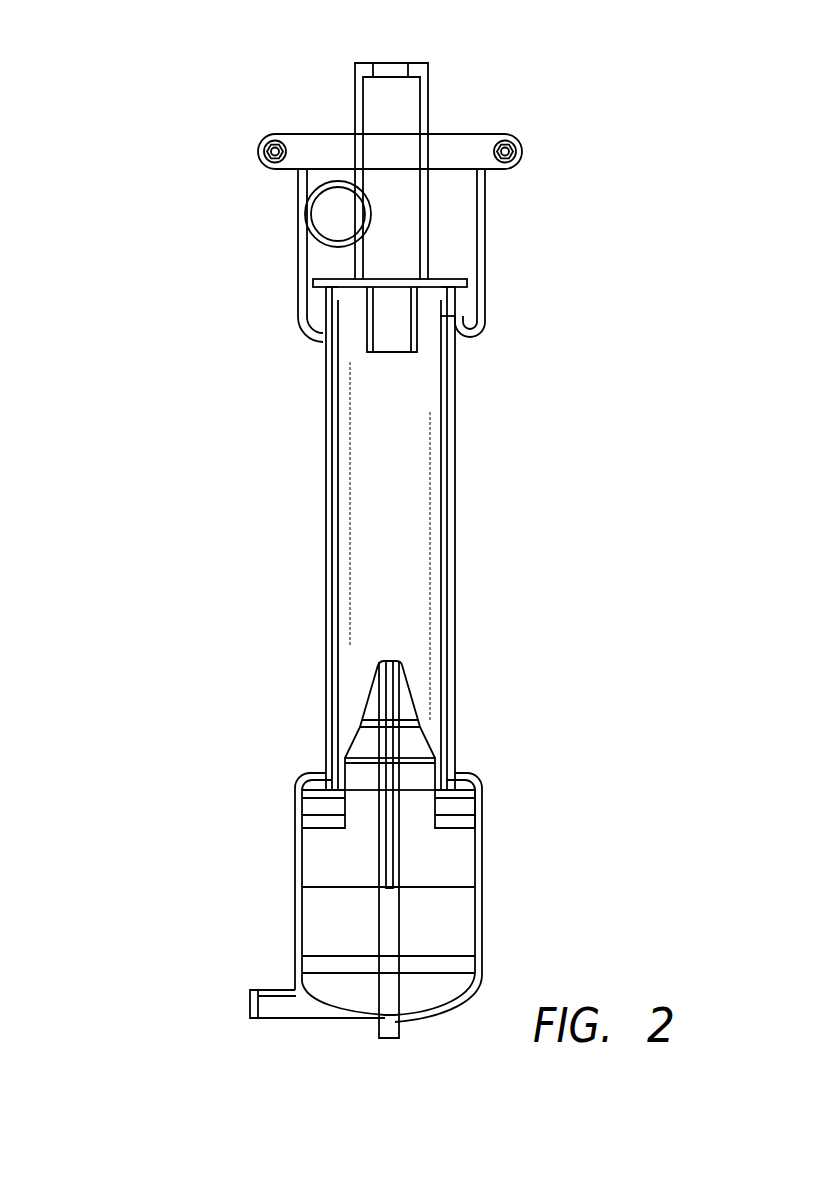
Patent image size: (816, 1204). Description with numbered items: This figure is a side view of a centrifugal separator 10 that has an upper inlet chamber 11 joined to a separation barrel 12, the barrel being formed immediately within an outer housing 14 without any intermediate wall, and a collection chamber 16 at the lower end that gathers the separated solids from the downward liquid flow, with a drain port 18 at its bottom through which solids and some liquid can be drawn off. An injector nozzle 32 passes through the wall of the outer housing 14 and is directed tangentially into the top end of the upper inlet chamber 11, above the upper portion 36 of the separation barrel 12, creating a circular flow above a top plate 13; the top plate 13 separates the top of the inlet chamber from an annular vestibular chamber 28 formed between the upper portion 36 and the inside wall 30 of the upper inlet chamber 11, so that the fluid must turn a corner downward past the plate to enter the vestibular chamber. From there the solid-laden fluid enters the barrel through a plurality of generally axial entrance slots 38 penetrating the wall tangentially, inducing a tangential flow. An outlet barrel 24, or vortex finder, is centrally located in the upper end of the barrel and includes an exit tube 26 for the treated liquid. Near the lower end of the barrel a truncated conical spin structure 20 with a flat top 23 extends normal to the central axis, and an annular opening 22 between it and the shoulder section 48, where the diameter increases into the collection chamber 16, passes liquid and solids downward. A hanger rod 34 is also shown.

The centrifugal separator 10 is at (240, 77).
The upper inlet chamber 11 is at (510, 271).
The separation barrel 12 is at (409, 516).
The top plate 13 is at (454, 277).
The outer housing 14 is at (458, 432).
The collection chamber 16 is at (483, 922).
The drain port 18 is at (263, 988).
The spin structure 20 is at (358, 682).
The annular opening 22 is at (440, 798).
The top 23 is at (390, 660).
The outlet barrel 24 is at (402, 353).
The exit tube 26 is at (428, 88).
The vestibular chamber 28 is at (467, 299).
The inside wall 30 is at (298, 313).
The injector nozzle 32 is at (330, 243).
The hanger rod 34 is at (300, 193).
The upper portion 36 is at (460, 323).
The entrance slots 38 is at (323, 342).
The shoulder section 48 is at (323, 763).